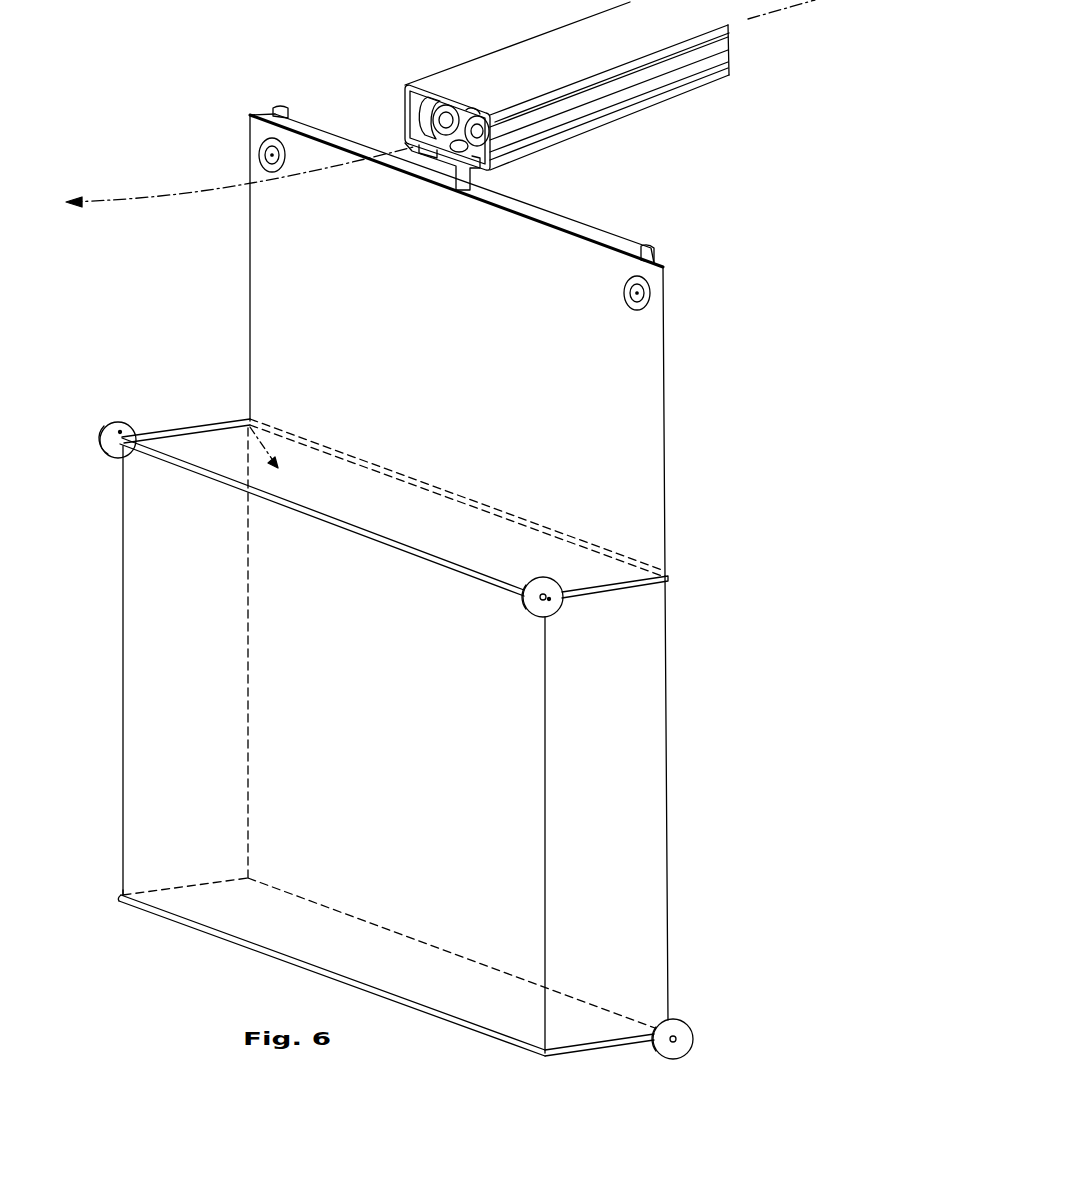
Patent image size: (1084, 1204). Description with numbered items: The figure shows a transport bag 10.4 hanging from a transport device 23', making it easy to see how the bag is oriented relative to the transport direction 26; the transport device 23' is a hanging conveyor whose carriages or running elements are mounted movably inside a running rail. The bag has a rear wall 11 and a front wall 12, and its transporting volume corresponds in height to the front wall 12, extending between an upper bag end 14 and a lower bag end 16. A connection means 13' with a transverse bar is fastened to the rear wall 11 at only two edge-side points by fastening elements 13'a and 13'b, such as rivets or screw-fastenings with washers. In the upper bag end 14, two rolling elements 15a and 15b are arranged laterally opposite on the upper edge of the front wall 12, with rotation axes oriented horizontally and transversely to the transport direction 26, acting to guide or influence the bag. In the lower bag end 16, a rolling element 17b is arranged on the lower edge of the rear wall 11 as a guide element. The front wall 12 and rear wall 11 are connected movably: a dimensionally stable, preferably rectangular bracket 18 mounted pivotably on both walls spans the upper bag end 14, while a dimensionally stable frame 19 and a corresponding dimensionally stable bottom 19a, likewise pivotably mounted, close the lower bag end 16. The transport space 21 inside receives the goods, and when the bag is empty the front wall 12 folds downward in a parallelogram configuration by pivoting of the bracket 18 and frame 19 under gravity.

The transport bag 10.4 is at (694, 518).
The rear wall 11 is at (580, 371).
The front wall 12 is at (313, 722).
The connection means 13' is at (456, 190).
The fastening element 13'a is at (232, 139).
The fastening element 13'b is at (680, 274).
The upper bag end 14 is at (174, 500).
The rolling element 15a is at (114, 427).
The rolling element 15b is at (553, 600).
The lower bag end 16 is at (248, 970).
The rolling element 17b is at (674, 1029).
The bracket 18 is at (652, 589).
The frame 19 is at (585, 1050).
The bottom 19a is at (268, 930).
The transport space 21 is at (245, 417).
The transport device 23' is at (546, 96).
The transport direction 26 is at (200, 196).